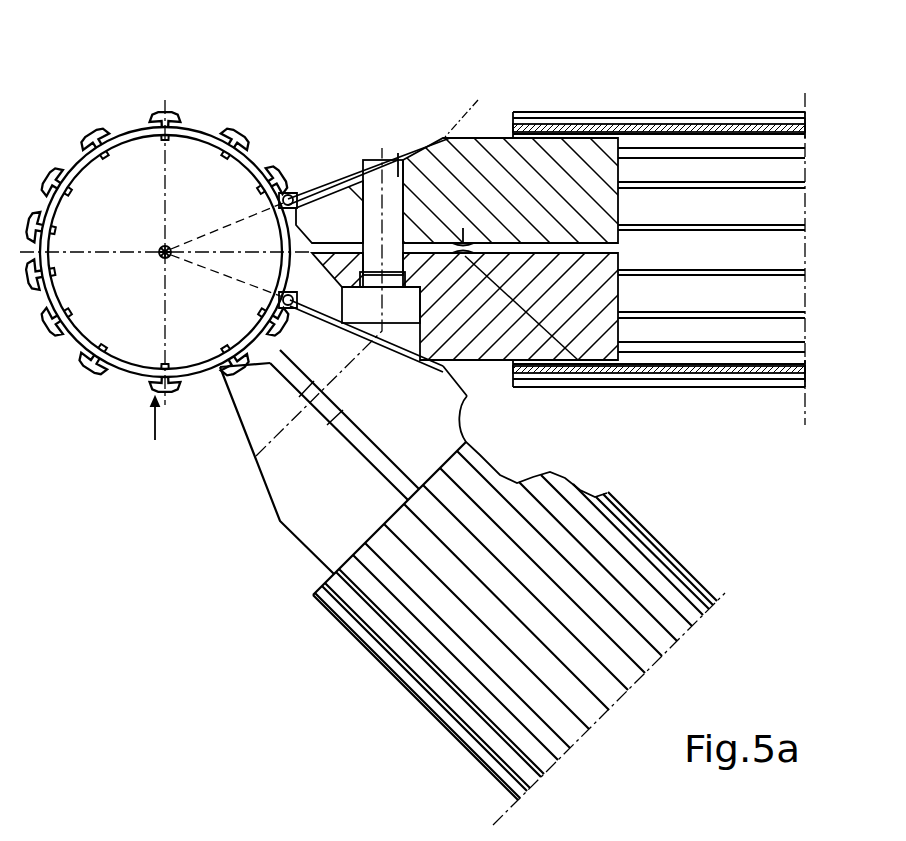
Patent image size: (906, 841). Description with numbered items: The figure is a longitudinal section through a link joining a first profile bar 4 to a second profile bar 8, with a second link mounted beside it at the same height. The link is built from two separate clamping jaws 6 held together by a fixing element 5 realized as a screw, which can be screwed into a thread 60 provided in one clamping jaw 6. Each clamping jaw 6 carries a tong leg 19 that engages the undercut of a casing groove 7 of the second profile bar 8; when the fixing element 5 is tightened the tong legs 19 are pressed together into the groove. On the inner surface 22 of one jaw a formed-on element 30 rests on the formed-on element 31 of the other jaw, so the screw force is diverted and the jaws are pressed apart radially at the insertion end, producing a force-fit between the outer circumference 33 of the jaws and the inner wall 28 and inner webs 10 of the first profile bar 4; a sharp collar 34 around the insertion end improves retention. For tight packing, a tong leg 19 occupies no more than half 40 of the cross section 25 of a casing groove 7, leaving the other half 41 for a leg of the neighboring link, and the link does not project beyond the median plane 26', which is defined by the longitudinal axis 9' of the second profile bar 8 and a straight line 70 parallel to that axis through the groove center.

The first profile bar 4 is at (768, 104).
The fixing element 5 is at (485, 372).
The clamping jaw 6 is at (470, 125).
The casing groove 7 is at (156, 432).
The second profile bar 8 is at (60, 145).
The longitudinal axis 9' is at (153, 237).
The inner webs 10 is at (782, 188).
The tong leg 19 is at (322, 195).
The inner surface 22 is at (545, 243).
The cross section 25 is at (256, 134).
The median plane 26' is at (510, 73).
The inner wall 28 is at (790, 357).
The formed-on element 30 is at (592, 372).
The formed-on element 31 is at (463, 232).
The outer circumference 33 is at (528, 387).
The sharp collar 34 is at (600, 128).
The half of the cross section 40 is at (158, 118).
The other half 41 is at (175, 118).
The thread 60 is at (404, 157).
The straight line 70 is at (290, 198).